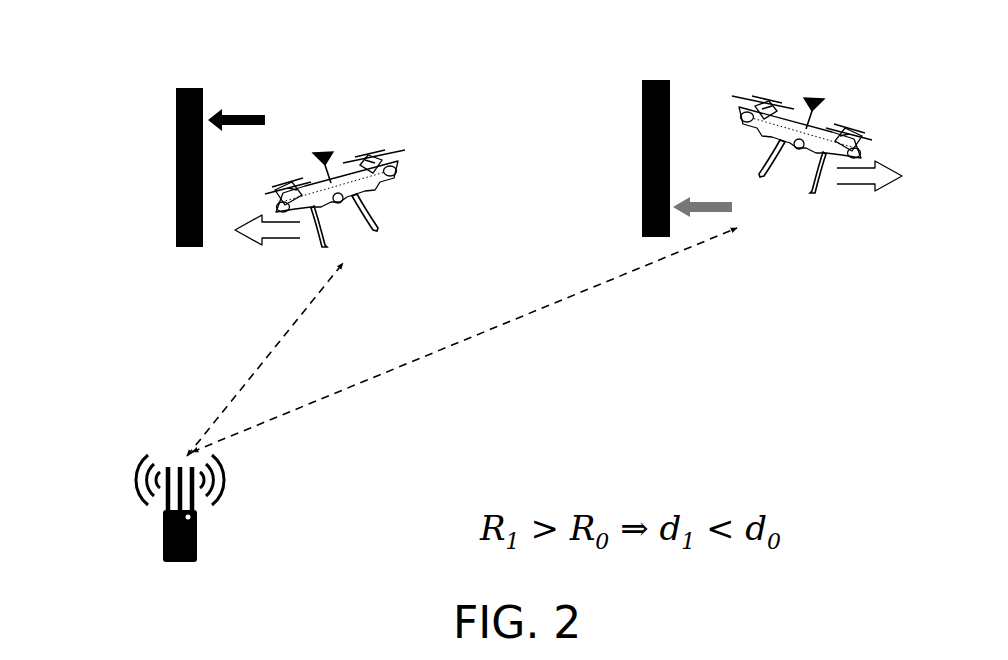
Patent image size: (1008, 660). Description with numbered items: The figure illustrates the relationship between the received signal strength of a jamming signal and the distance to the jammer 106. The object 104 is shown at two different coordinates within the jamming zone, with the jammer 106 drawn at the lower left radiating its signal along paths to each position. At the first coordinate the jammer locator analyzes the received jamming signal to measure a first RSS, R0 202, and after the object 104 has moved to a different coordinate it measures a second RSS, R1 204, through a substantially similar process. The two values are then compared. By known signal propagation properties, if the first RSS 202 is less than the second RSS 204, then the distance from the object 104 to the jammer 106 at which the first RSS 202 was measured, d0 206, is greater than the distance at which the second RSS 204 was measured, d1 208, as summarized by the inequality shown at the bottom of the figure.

The object 104 is at (732, 175).
The jammer 106 is at (130, 532).
The first RSS 202 is at (762, 242).
The second RSS 204 is at (293, 75).
The distance d0 206 is at (412, 372).
The distance d1 208 is at (248, 367).